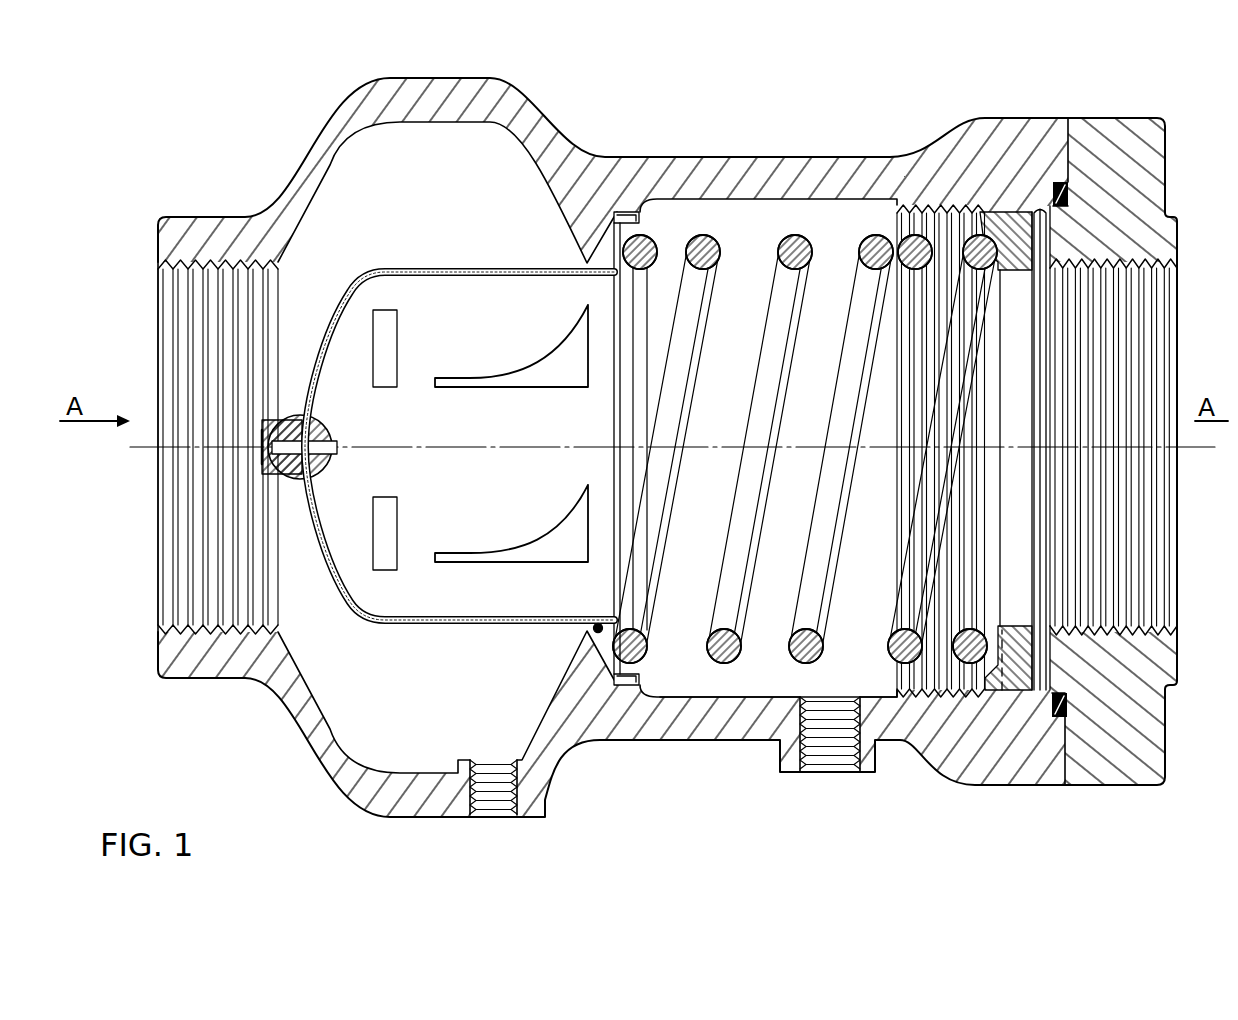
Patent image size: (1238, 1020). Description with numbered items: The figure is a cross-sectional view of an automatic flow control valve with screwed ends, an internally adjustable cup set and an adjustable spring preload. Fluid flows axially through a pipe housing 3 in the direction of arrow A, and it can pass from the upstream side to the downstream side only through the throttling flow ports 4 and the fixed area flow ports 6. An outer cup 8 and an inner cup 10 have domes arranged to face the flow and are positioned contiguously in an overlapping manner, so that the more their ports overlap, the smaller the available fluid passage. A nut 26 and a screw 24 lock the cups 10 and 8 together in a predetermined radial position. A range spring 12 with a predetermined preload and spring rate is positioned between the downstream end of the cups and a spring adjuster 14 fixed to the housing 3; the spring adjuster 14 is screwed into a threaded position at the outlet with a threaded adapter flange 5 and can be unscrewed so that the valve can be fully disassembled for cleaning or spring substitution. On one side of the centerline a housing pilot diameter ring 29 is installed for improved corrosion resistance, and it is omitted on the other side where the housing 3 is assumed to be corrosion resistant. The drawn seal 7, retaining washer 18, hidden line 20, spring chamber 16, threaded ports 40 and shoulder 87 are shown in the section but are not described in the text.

The pipe housing 3 is at (295, 178).
The flow port 4 is at (551, 380).
The threaded adapter flange 5 is at (1150, 320).
The flow port 6 is at (392, 348).
The seal ring 7 is at (1056, 720).
The outer cup 8 is at (448, 315).
The inner cup 10 is at (459, 446).
The range spring 12 is at (867, 242).
The spring adjuster 14 is at (1015, 227).
The spring chamber 16 is at (766, 657).
The retaining washer 18 is at (627, 213).
The hidden passage 20 is at (1000, 693).
The screw 24 is at (324, 434).
The nut 26 is at (268, 438).
The housing pilot diameter ring 29 is at (597, 633).
The threaded port 40 is at (500, 810).
The shoulder 87 is at (870, 680).